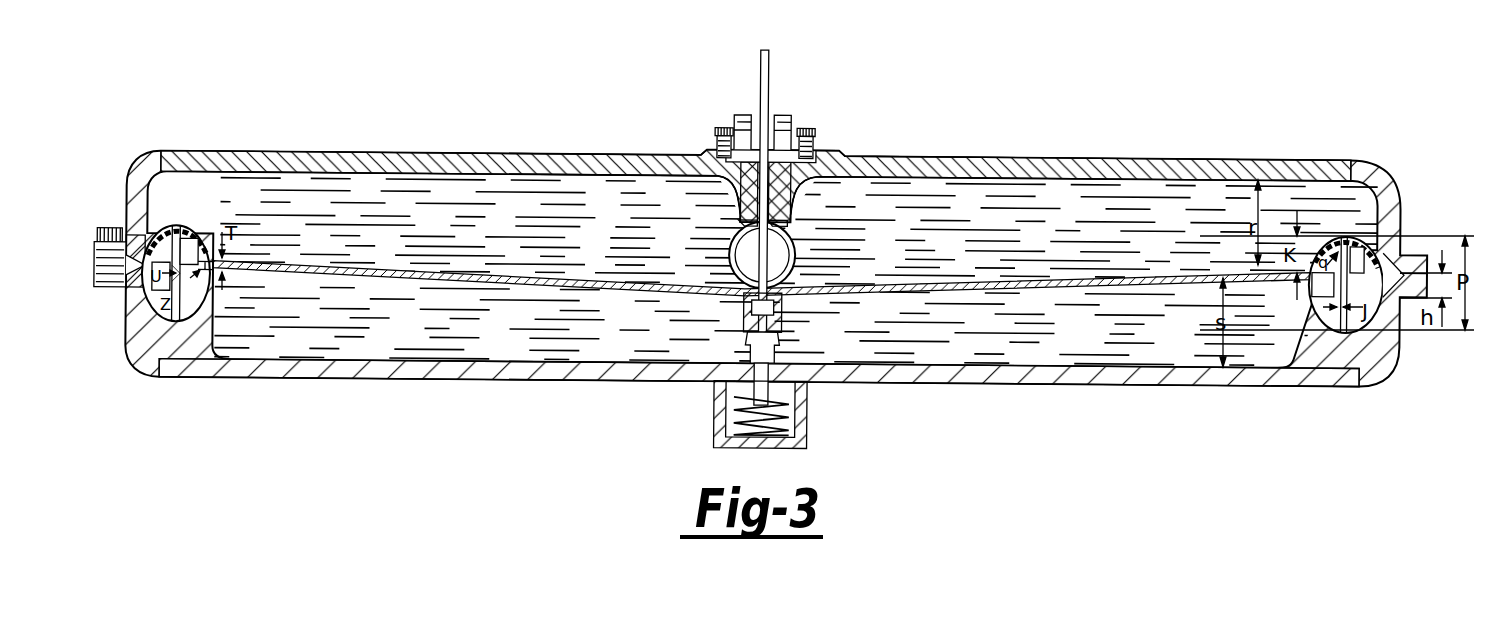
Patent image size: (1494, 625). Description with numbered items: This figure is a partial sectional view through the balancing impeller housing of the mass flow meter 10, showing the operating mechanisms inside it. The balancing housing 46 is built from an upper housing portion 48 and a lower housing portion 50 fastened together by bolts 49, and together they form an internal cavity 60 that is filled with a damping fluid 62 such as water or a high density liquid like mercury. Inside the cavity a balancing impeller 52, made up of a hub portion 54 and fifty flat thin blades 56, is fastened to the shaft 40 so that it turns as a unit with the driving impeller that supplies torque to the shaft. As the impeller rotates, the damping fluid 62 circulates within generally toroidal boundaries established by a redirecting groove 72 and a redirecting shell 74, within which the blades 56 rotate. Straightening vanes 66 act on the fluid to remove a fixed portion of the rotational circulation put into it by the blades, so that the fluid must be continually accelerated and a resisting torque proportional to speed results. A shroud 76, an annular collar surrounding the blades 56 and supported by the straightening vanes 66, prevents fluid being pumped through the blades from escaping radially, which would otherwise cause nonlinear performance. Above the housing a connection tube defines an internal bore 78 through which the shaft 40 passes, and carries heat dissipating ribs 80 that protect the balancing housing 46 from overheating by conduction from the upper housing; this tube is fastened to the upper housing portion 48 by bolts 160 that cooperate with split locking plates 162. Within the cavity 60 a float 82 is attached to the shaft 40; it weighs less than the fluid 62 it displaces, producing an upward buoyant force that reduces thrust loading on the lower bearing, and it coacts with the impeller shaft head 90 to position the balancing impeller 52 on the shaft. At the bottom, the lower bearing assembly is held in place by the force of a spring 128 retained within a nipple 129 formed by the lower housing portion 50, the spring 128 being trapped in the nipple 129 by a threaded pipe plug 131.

The mounting assembly 10 is at (168, 251).
The shaft 40 is at (768, 69).
The balancing housing 46 is at (1175, 119).
The housing portion 48 is at (1300, 157).
The bolts 49 is at (112, 230).
The housing portion 50 is at (345, 384).
The balancing impeller 52 is at (515, 300).
The hub portion 54 is at (632, 296).
The blades 56 is at (194, 294).
The internal cavity 60 is at (405, 208).
The damping fluid 62 is at (548, 238).
The straightening vanes 66 is at (158, 285).
The redirecting groove 72 is at (145, 293).
The redirecting shell 74 is at (193, 262).
The shroud 76 is at (172, 297).
The internal bore 78 is at (757, 115).
The heat dissipating ribs 80 is at (785, 129).
The float 82 is at (795, 247).
The impeller shaft head 90 is at (748, 301).
The spring 128 is at (800, 423).
The nipple 129 is at (805, 405).
The threaded pipe plug 131 is at (780, 451).
The bolts 160 is at (716, 130).
The split locking plates 162 is at (712, 151).